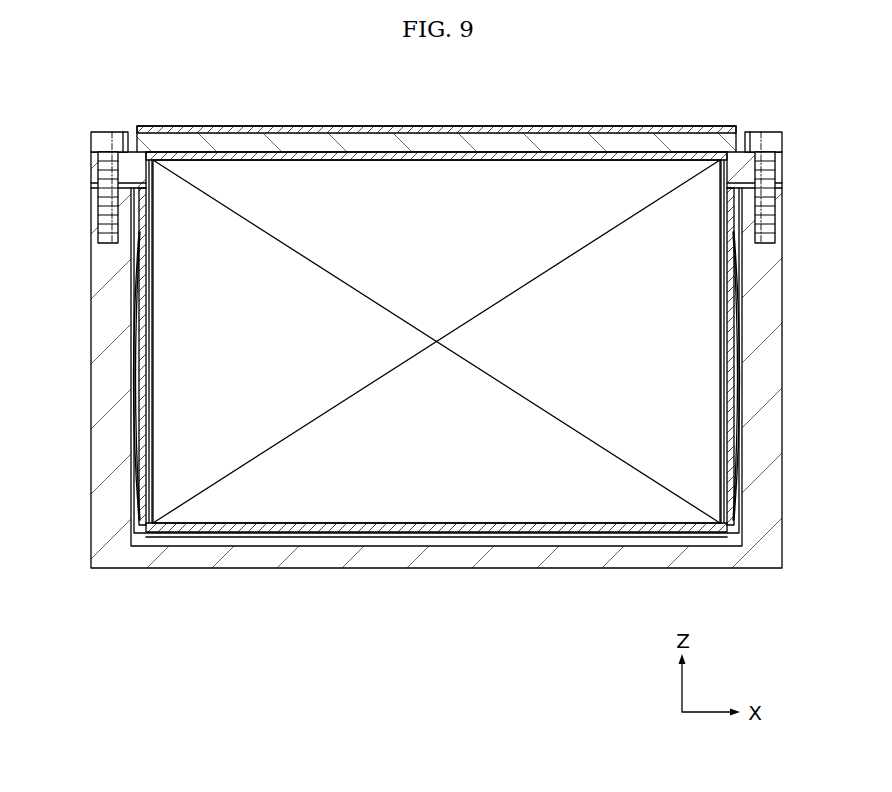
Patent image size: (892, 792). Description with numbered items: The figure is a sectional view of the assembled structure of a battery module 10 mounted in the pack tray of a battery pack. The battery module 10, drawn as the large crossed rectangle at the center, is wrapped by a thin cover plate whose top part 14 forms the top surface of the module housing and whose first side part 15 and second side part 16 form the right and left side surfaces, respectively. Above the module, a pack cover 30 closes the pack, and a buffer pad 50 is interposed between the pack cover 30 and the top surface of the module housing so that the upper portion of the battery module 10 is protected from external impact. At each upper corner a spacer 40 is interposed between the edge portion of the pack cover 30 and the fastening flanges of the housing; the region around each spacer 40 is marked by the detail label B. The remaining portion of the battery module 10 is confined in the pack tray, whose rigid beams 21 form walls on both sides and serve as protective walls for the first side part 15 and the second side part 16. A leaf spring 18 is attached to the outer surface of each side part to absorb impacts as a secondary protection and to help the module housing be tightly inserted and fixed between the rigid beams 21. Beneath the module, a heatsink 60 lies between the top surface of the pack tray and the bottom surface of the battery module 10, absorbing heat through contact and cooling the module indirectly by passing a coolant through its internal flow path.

The battery module 10 is at (276, 491).
The top part 14 is at (383, 157).
The first side part 15 is at (725, 448).
The second side part 16 is at (148, 452).
The leaf spring 18 is at (134, 314).
The rigid beam 21 is at (100, 380).
The pack cover 30 is at (557, 128).
The spacer 40 is at (95, 170).
The buffer pad 50 is at (472, 140).
The heatsink 60 is at (710, 540).
The detail section B is at (107, 131).